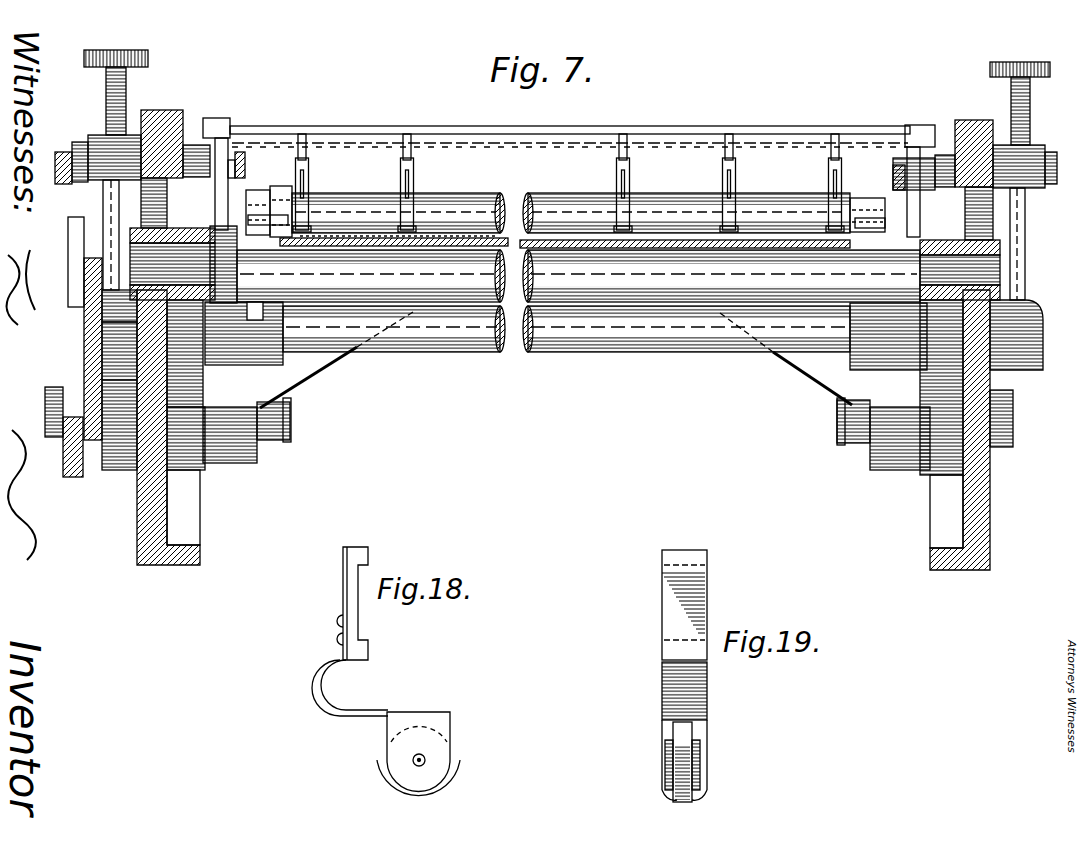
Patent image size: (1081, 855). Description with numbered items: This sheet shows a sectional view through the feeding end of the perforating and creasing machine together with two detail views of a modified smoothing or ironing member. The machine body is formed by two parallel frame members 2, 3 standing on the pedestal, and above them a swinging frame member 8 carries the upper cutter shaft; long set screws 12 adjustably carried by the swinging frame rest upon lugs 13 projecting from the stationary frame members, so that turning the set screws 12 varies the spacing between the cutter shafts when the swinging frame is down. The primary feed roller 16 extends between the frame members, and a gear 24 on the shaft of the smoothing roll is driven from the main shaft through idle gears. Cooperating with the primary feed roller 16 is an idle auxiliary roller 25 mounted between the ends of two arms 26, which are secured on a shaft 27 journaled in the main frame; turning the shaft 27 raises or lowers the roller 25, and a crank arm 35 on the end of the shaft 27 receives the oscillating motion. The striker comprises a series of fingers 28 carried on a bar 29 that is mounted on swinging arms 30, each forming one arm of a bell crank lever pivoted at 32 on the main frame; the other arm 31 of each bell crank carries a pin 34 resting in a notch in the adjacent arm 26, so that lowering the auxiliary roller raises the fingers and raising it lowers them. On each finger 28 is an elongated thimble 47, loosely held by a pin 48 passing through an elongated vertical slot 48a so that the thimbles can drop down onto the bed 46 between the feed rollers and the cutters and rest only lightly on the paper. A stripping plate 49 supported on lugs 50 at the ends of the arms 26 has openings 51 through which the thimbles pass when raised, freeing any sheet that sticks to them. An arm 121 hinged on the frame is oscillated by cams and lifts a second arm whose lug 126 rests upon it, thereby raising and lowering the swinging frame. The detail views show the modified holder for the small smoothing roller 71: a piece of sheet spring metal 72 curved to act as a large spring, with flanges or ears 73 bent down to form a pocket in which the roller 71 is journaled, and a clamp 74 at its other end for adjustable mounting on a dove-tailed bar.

In FIG. 7, the frame member 2 is at (947, 498).
In FIG. 7, the frame member 3 is at (188, 518).
In FIG. 7, the swinging frame member 8 is at (163, 112).
In FIG. 7, the set screw 12 is at (128, 88).
In FIG. 7, the lug 13 is at (115, 302).
In FIG. 7, the primary feed roller 16 is at (473, 282).
In FIG. 7, the gear 24 is at (237, 263).
In FIG. 7, the auxiliary feed roller 25 is at (597, 202).
In FIG. 7, the arm 26 is at (265, 190).
In FIG. 7, the shaft 27 is at (580, 353).
In FIG. 7, the striker finger 28 is at (392, 140).
In FIG. 7, the bar 29 is at (592, 130).
In FIG. 7, the swinging arm 30 is at (220, 120).
In FIG. 7, the arm 31 is at (218, 194).
In FIG. 7, the pivot 32 is at (236, 152).
In FIG. 7, the pin 34 is at (232, 237).
In FIG. 7, the crank arm 35 is at (70, 258).
In FIG. 7, the bed 46 is at (647, 250).
In FIG. 7, the thimble 47 is at (568, 165).
In FIG. 7, the pin 48 is at (619, 183).
In FIG. 7, the slot 48a is at (630, 172).
In FIG. 7, the stripping plate 49 is at (431, 302).
In FIG. 7, the lug 50 is at (274, 222).
In FIG. 7, the opening 51 is at (412, 228).
In FIG. 18, the smoothing roller 71 is at (416, 754).
In FIG. 19, the smoothing roller 71 is at (709, 773).
In FIG. 18, the sheet spring metal holder 72 is at (312, 685).
In FIG. 19, the sheet spring metal holder 72 is at (662, 683).
In FIG. 18, the flange 73 is at (397, 752).
In FIG. 19, the flange 73 is at (685, 800).
In FIG. 18, the clamp 74 is at (350, 583).
In FIG. 19, the clamp 74 is at (670, 602).
In FIG. 7, the arm 121 is at (63, 470).
In FIG. 7, the lug 126 is at (63, 403).